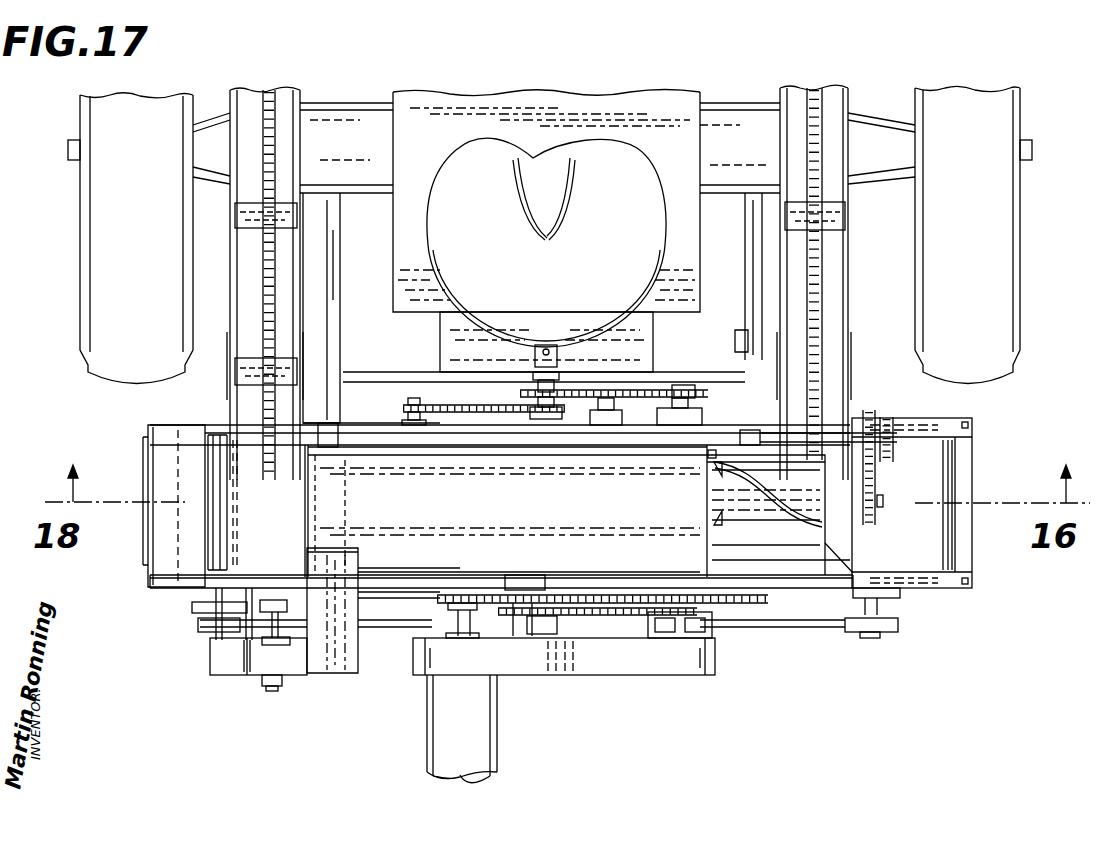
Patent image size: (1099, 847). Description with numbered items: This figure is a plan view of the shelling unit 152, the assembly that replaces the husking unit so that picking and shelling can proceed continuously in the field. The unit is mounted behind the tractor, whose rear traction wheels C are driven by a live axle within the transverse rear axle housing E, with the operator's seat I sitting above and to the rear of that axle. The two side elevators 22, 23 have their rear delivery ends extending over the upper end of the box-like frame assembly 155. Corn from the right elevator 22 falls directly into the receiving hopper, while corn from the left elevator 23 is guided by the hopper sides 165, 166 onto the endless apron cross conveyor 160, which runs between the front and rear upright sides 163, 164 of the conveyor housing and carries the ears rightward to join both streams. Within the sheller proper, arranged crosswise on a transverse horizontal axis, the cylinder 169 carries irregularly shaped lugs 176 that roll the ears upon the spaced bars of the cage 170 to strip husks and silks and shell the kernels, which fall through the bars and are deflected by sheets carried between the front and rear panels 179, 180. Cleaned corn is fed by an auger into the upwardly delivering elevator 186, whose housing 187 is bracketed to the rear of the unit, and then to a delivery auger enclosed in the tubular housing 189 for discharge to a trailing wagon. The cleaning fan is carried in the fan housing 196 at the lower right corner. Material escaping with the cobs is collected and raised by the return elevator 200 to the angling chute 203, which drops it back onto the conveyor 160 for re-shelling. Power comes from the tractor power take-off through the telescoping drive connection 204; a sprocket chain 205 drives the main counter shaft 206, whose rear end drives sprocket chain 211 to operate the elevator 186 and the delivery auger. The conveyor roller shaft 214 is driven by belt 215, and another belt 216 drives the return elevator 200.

The rear traction wheels C is at (138, 103).
The rear axle housing E is at (364, 104).
The operator's seat I is at (552, 289).
The side elevator 23 is at (228, 293).
The side elevator 22 is at (857, 300).
The drive connection 204 is at (560, 355).
The sprocket chain 205 is at (650, 392).
The main counter shaft 206 is at (680, 388).
The front panel 179 is at (358, 426).
The front upright side 163 is at (473, 440).
The endless apron cross conveyor 160 is at (478, 516).
The hopper side 165 is at (308, 518).
The hopper side 166 is at (226, 512).
The cage 170 is at (702, 454).
The lugs 176 is at (720, 478).
The cylinder 169 is at (722, 498).
The rear upright side 164 is at (472, 580).
The rear panel 180 is at (395, 588).
The box-like frame assembly 155 is at (416, 592).
The chute 203 is at (348, 664).
The belt 215 is at (360, 633).
The shelling unit 152 is at (185, 612).
The shaft 214 is at (215, 640).
The belt 216 is at (256, 620).
The return elevator 200 is at (262, 692).
The sprocket chain 211 is at (720, 607).
The elevator 186 is at (630, 678).
The housing 187 is at (575, 668).
The tubular housing 189 is at (498, 755).
The fan housing 196 is at (935, 549).